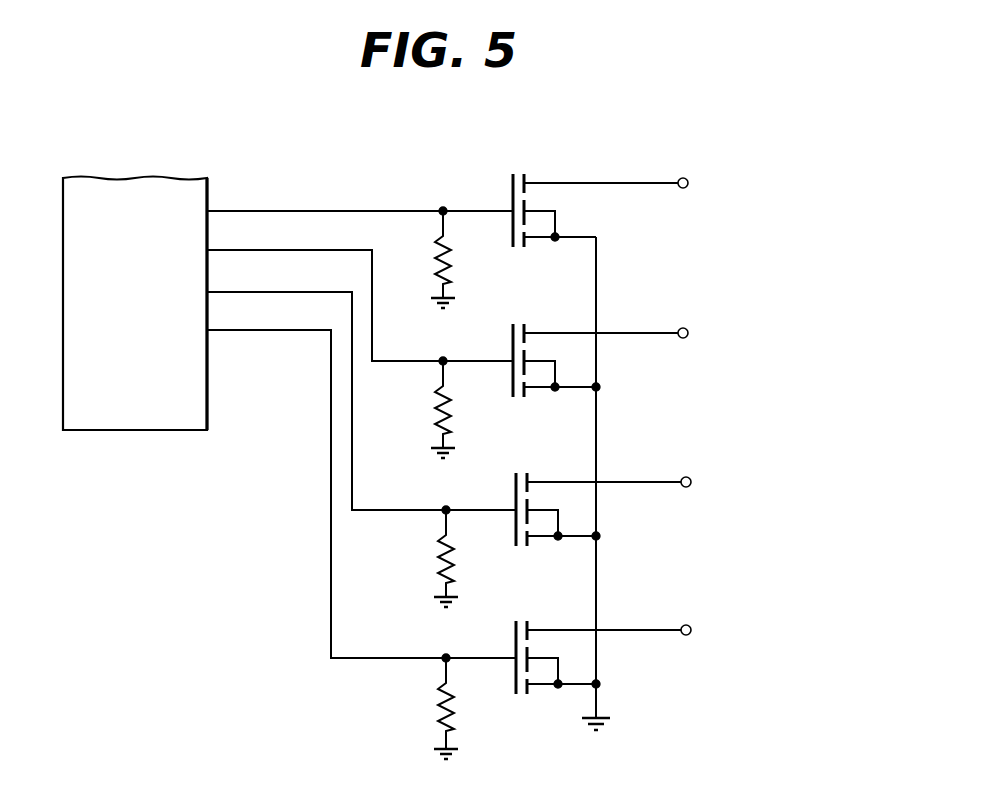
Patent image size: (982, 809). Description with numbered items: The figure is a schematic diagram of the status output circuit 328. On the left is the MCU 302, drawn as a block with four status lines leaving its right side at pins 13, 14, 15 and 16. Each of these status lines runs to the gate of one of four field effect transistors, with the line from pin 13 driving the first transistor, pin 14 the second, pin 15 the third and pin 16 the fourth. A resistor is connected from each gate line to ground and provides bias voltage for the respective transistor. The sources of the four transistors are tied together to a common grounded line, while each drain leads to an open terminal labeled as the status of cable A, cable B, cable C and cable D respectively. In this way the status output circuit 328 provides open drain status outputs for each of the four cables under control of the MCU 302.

The MCU 302 is at (182, 177).
The MCU port pin PC4 13 is at (360, 193).
The MCU port pin PC5 14 is at (360, 289).
The MCU port pin PC6 15 is at (361, 383).
The MCU port pin PC7 16 is at (361, 477).
The status output circuit 328 is at (633, 166).